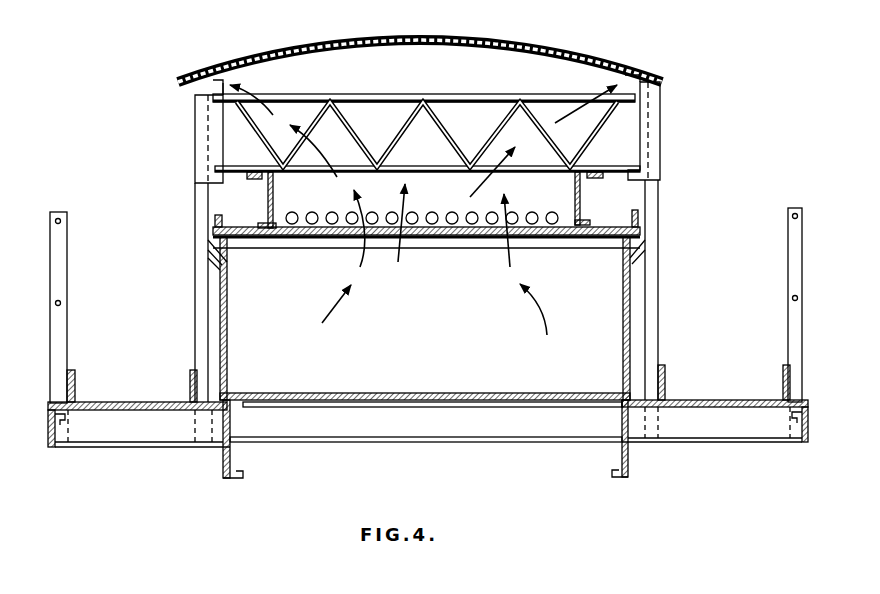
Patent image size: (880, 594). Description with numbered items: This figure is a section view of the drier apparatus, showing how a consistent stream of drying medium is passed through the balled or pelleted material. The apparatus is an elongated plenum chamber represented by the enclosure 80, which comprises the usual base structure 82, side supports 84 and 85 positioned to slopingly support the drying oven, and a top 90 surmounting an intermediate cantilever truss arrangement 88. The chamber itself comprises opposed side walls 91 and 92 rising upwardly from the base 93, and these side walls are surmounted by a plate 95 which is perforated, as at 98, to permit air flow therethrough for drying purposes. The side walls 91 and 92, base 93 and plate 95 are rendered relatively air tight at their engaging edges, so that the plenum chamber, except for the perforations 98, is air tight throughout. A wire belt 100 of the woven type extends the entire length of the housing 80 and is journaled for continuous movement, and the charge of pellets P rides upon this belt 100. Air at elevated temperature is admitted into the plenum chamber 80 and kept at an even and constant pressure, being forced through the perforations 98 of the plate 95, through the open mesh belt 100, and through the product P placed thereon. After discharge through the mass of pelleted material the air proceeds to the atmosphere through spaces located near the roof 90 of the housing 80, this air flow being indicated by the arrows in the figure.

The enclosure 80 is at (451, 339).
The base structure 82 is at (163, 402).
The side support 84 is at (205, 317).
The side support 85 is at (655, 352).
The intermediate cantilever truss arrangement 88 is at (407, 97).
The top 90 is at (538, 42).
The side wall 91 is at (230, 340).
The side wall 92 is at (426, 339).
The base 93 is at (430, 393).
The plate 95 is at (257, 238).
The perforations 98 is at (450, 240).
The wire belt 100 is at (567, 215).
The charge of pellets P is at (340, 210).